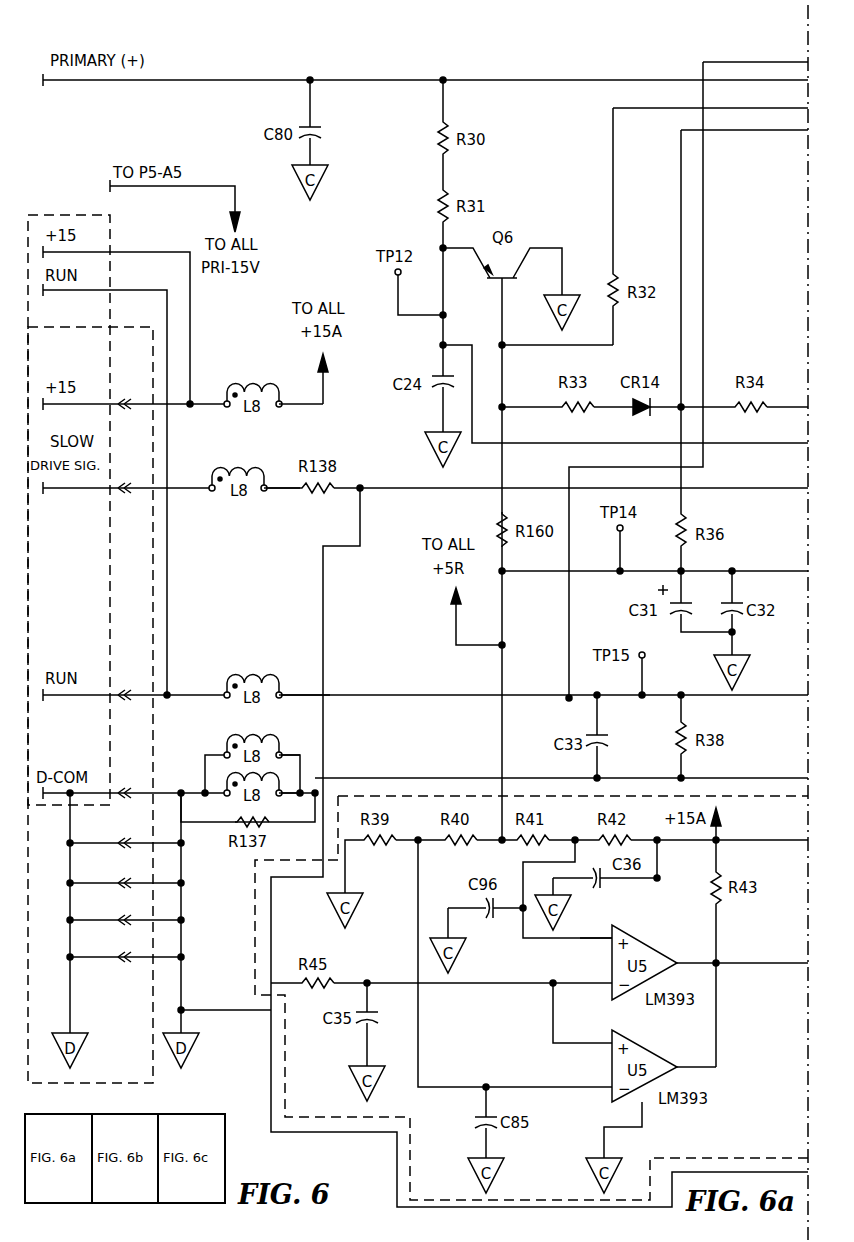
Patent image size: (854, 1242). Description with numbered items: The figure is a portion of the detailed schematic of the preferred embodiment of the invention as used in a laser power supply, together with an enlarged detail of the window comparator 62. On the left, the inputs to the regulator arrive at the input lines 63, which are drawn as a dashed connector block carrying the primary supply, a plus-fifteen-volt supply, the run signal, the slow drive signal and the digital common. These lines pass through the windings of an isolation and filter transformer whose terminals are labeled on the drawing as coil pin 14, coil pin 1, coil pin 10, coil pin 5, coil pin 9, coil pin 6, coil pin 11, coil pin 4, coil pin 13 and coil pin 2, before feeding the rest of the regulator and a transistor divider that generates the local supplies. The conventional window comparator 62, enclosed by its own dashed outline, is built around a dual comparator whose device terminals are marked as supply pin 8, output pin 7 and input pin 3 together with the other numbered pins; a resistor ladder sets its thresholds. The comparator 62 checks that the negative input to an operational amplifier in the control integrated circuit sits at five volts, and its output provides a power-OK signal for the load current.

In FIG. 6a, the window comparator 62 is at (254, 931).
In FIG. 6, the input lines 63 is at (60, 213).
In FIG. 6, the L8 pin 14 is at (250, 406).
In FIG. 6, the pin 1 is at (301, 416).
In FIG. 6a, the pin 1 is at (696, 1057).
In FIG. 6, the L8 pin 10 is at (235, 490).
In FIG. 6, the pin 5 is at (282, 500).
In FIG. 6a, the pin 5 is at (596, 950).
In FIG. 6, the L8 pin 9 is at (250, 697).
In FIG. 6, the pin 6 is at (304, 707).
In FIG. 6a, the pin 6 is at (596, 992).
In FIG. 6, the L8 pin 11 is at (244, 755).
In FIG. 6, the pin 4 is at (289, 765).
In FIG. 6a, the pin 4 is at (614, 1147).
In FIG. 6, the L8 pin 13 is at (249, 795).
In FIG. 6, the pin 2 is at (289, 805).
In FIG. 6a, the pin 2 is at (596, 1100).
In FIG. 6a, the U5 pin 8 is at (644, 954).
In FIG. 6a, the U5 pin 7 is at (742, 953).
In FIG. 6a, the U5 pin 3 is at (596, 1055).